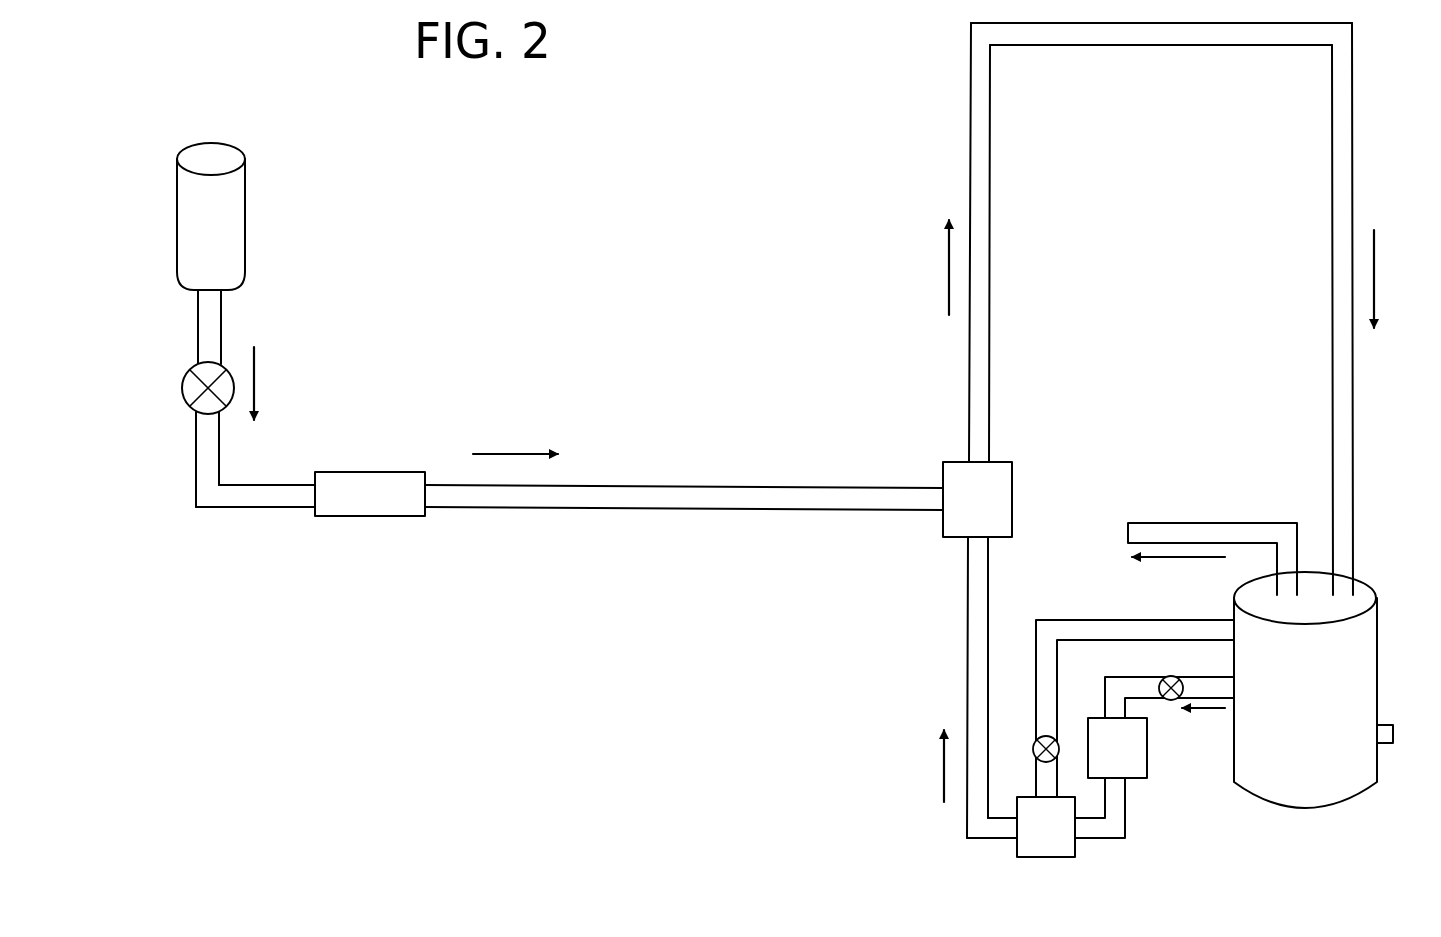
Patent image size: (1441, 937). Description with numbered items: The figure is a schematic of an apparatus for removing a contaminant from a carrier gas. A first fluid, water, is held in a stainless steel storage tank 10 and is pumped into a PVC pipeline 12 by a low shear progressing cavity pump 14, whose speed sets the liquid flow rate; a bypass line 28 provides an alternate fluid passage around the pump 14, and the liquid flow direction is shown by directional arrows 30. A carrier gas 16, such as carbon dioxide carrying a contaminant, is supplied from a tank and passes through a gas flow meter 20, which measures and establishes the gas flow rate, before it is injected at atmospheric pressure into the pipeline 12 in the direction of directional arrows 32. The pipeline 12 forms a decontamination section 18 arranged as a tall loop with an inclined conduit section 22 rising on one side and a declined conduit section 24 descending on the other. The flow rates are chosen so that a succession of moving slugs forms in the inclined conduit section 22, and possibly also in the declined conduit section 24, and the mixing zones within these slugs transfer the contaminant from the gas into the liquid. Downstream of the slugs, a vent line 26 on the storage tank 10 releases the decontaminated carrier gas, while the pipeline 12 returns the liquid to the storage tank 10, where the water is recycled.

The storage tank 10 is at (1286, 707).
The pipeline 12 is at (665, 487).
The pump 14 is at (1101, 764).
The carrier gas 16 is at (194, 230).
The decontamination section 18 is at (1090, 430).
The gas flow meter 20 is at (350, 506).
The inclined conduit section 22 is at (989, 248).
The declined conduit section 24 is at (1331, 273).
The vent line 26 is at (1193, 522).
The bypass line 28 is at (1065, 618).
The directional arrows 30 is at (938, 763).
The directional arrows 32 is at (254, 378).